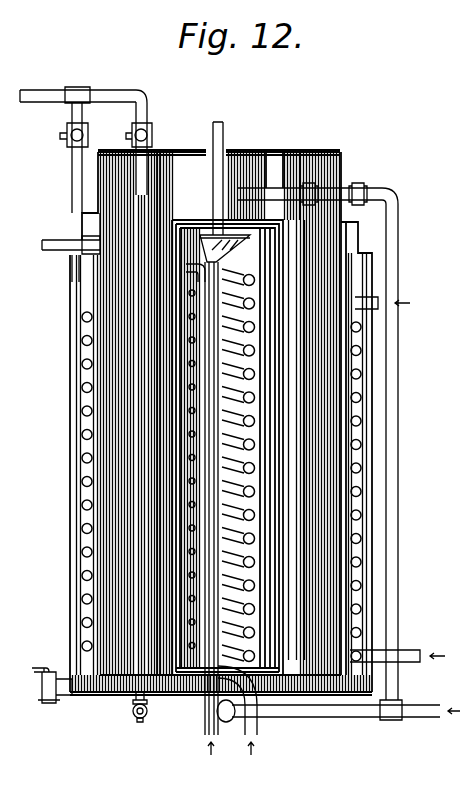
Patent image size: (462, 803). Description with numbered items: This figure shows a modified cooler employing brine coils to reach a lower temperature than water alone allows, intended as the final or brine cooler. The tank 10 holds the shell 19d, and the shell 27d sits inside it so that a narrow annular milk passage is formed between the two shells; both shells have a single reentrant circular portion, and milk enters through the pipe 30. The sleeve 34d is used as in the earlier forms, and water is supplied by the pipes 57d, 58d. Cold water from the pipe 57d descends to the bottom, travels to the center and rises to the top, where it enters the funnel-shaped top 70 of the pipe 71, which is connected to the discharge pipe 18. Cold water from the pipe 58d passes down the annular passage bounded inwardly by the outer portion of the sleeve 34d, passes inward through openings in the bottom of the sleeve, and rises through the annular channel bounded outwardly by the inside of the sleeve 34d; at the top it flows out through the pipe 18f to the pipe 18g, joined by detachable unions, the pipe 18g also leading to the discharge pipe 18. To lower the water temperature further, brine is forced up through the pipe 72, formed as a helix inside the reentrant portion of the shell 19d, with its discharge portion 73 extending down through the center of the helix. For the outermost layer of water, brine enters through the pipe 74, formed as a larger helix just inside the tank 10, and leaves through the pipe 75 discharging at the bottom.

The tank 10 is at (72, 396).
The discharge pipe 18 is at (363, 710).
The pipe 18f is at (249, 193).
The pipe 18g is at (391, 462).
The shell 19d is at (93, 290).
The shell 27d is at (73, 332).
The pipe 30 is at (218, 126).
The sleeve 34d is at (152, 153).
The pipe 57d is at (75, 195).
The pipe 58d is at (147, 110).
The funnel-shaped top 70 is at (223, 245).
The pipe 71 is at (208, 702).
The pipe 72 is at (257, 727).
The discharge portion 73 is at (213, 675).
The pipe 74 is at (373, 300).
The pipe 75 is at (404, 650).